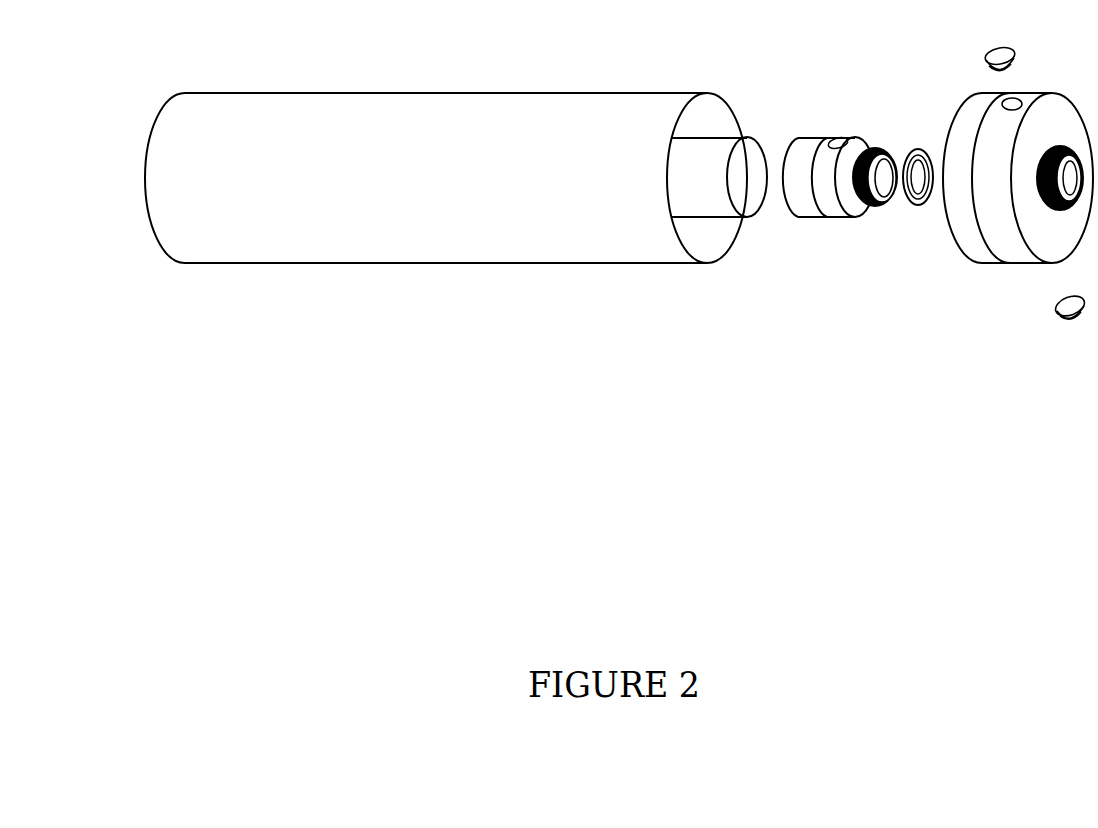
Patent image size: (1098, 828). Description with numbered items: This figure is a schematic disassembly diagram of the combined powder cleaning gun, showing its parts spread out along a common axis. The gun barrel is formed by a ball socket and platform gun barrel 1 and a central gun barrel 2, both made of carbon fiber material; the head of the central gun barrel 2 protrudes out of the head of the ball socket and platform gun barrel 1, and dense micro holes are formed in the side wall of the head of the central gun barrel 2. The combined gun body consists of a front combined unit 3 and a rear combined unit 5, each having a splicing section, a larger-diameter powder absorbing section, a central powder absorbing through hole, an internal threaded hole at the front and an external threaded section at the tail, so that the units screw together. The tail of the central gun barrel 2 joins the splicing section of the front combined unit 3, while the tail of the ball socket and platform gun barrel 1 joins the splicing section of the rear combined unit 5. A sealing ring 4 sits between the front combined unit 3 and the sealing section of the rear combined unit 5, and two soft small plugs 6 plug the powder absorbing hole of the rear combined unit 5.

The ball socket and platform gun barrel 1 is at (581, 210).
The central gun barrel 2 is at (750, 183).
The front combined unit 3 is at (848, 217).
The sealing ring 4 is at (915, 203).
The rear combined unit 5 is at (955, 217).
The small plug 6 is at (1075, 318).